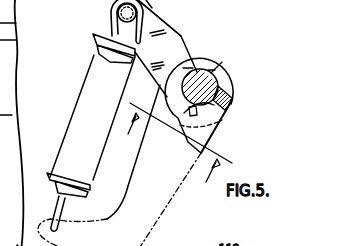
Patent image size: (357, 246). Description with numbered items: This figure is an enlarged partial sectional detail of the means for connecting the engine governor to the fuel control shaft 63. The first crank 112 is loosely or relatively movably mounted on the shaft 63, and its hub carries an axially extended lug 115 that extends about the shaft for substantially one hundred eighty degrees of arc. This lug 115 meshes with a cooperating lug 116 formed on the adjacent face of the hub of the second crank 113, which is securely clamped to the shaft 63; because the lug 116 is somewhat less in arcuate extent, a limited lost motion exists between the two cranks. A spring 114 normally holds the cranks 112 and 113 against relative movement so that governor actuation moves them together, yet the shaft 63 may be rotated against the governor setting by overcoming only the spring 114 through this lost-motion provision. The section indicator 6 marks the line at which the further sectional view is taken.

The spring 114 is at (95, 48).
The first crank 112 is at (178, 38).
The lug 115 is at (198, 61).
The fuel control shaft 63 is at (198, 76).
The cooperating lug 116 is at (232, 100).
The second crank 113 is at (157, 220).
The section line 6- 6 is at (175, 152).